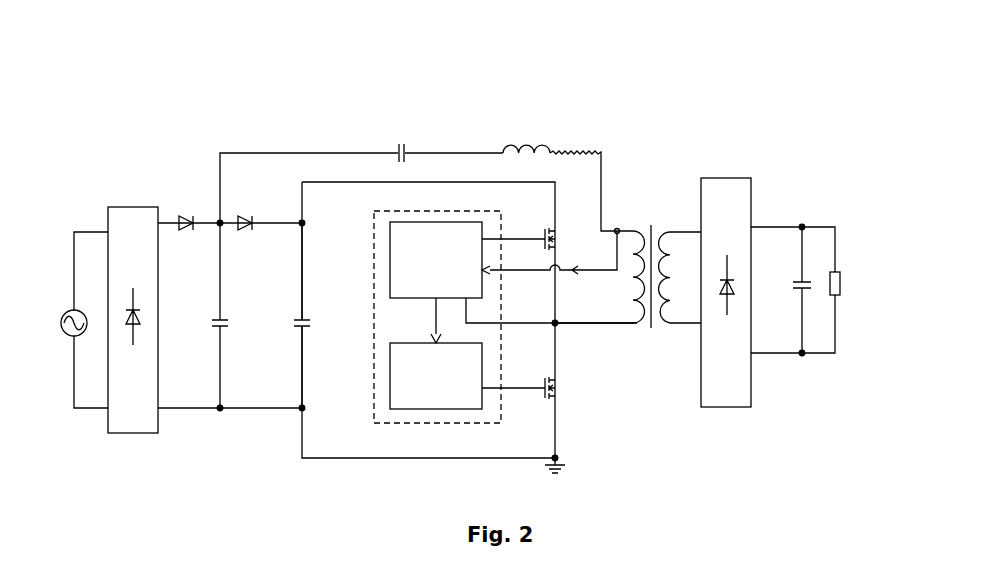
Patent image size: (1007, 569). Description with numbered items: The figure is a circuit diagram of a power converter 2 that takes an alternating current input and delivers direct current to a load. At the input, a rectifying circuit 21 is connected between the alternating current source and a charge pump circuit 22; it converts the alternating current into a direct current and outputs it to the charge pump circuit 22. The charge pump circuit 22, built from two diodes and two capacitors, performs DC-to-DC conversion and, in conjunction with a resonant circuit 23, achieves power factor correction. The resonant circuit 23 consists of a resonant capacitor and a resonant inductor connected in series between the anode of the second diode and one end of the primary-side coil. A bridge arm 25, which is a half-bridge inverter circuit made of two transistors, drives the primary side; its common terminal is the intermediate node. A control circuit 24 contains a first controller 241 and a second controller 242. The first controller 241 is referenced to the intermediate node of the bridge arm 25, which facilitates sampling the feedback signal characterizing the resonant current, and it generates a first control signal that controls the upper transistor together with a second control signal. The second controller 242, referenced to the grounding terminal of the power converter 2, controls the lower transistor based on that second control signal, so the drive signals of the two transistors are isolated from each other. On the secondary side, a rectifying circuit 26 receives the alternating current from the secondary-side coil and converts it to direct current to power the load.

The power converter 2 is at (298, 118).
The rectifying circuit 21 is at (138, 207).
The charge pump circuit 22 is at (198, 202).
The resonant circuit 23 is at (435, 137).
The control circuit 24 is at (390, 210).
The first controller 241 is at (390, 235).
The second controller 242 is at (390, 363).
The bridge arm 25 is at (565, 345).
The rectifying circuit 26 is at (727, 178).